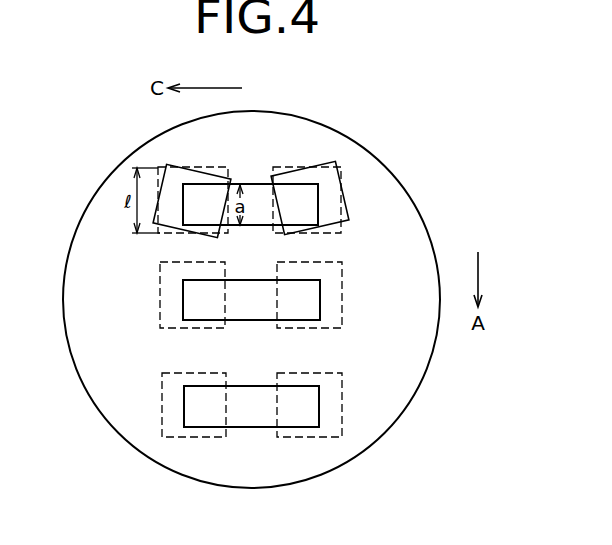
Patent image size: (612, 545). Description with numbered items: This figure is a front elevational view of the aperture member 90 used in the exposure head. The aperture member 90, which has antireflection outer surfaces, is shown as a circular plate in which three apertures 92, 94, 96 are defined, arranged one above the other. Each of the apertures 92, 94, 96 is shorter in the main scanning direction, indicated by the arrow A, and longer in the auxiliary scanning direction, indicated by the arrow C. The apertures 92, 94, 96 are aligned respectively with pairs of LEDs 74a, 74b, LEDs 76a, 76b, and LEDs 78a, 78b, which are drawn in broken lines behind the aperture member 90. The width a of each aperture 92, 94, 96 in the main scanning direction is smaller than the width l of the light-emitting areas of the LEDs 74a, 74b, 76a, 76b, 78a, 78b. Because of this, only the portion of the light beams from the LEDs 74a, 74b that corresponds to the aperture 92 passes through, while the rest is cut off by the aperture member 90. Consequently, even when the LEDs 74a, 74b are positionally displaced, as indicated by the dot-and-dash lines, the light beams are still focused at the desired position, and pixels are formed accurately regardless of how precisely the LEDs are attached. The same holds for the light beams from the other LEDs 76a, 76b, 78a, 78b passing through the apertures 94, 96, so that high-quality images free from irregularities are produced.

The aperture member 90 is at (394, 187).
The aperture 92 is at (252, 197).
The aperture 94 is at (252, 292).
The aperture 96 is at (256, 398).
The LED 74a is at (204, 167).
The LED 74b is at (279, 167).
The LED 76a is at (160, 300).
The LED 76b is at (342, 298).
The LED 78a is at (161, 392).
The LED 78b is at (343, 398).